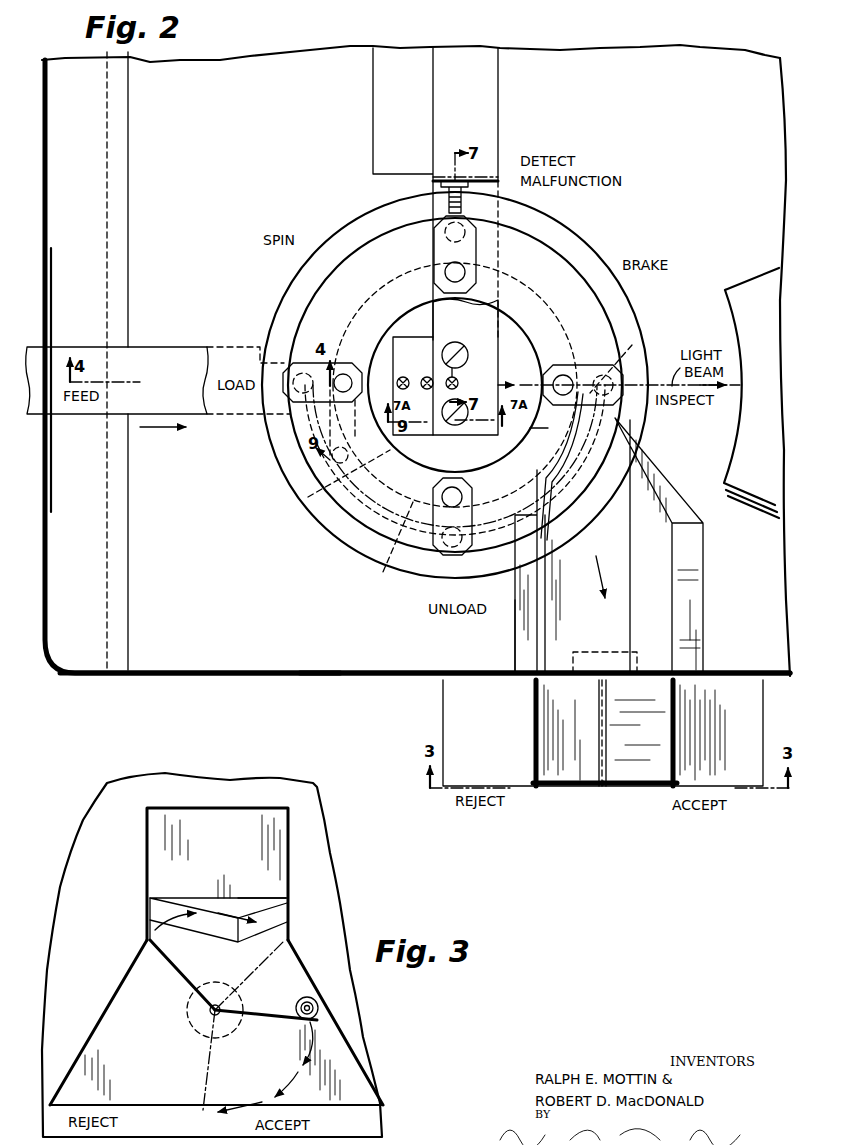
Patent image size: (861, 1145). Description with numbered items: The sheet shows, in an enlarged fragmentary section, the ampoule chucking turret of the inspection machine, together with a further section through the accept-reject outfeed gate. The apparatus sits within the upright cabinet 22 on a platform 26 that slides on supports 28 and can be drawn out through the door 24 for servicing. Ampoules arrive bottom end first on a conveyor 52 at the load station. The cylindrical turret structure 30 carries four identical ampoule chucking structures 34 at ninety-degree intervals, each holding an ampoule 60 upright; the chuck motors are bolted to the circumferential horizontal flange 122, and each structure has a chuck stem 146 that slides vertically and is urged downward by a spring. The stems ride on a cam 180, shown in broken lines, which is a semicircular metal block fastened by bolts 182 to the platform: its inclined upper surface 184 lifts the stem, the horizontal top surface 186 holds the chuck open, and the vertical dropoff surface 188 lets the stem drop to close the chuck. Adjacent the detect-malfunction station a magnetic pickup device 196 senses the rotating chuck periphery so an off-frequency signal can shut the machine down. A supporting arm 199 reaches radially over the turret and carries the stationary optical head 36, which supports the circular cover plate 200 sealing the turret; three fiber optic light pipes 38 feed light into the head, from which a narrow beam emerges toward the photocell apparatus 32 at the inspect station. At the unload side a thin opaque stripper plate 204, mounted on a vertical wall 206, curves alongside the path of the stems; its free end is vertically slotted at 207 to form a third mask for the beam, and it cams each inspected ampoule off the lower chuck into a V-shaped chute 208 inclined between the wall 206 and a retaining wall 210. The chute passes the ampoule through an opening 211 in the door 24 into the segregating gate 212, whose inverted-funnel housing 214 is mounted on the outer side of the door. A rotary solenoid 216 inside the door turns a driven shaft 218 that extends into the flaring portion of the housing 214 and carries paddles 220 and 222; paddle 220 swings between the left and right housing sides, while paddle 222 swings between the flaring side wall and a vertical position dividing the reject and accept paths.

In FIG. 2, the upright cabinet 22 is at (40, 670).
In FIG. 2, the door 24 is at (203, 675).
In FIG. 3, the door 24 is at (83, 856).
In FIG. 2, the platform 26 is at (313, 675).
In FIG. 2, the supports 28 is at (120, 559).
In FIG. 2, the turret structure 30 is at (345, 554).
In FIG. 2, the photocell apparatus 32 is at (745, 280).
In FIG. 2, the ampoule chucking structures 34 is at (484, 268).
In FIG. 2, the optical head 36 is at (425, 327).
In FIG. 2, the fiber optic light pipes 38 is at (450, 378).
In FIG. 2, the conveyor 52 is at (145, 350).
In FIG. 3, the ampoule 60 is at (300, 1000).
In FIG. 2, the circumferential horizontal flange 122 is at (626, 316).
In FIG. 2, the chuck stem 146 is at (447, 272).
In FIG. 2, the cam 180 is at (346, 531).
In FIG. 2, the bolts 182 is at (553, 478).
In FIG. 2, the inclined upper surface 184 is at (522, 429).
In FIG. 2, the horizontal top surface 186 is at (455, 424).
In FIG. 2, the vertical dropoff surface 188 is at (326, 426).
In FIG. 2, the magnetic pickup device 196 is at (448, 198).
In FIG. 2, the supporting arm 199 is at (498, 328).
In FIG. 2, the cover plate 200 is at (520, 341).
In FIG. 2, the stripper plate 204 is at (643, 414).
In FIG. 2, the vertical wall 206 is at (524, 641).
In FIG. 2, the vertical slot 207 is at (636, 344).
In FIG. 2, the V-shaped chute 208 is at (592, 504).
In FIG. 3, the V-shaped chute 208 is at (176, 910).
In FIG. 2, the retaining wall 210 is at (695, 608).
In FIG. 3, the opening 211 is at (266, 878).
In FIG. 2, the segregating gate 212 is at (441, 717).
In FIG. 3, the segregating gate 212 is at (140, 948).
In FIG. 3, the housing 214 is at (290, 913).
In FIG. 2, the rotary solenoid 216 is at (638, 650).
In FIG. 3, the rotary solenoid 216 is at (188, 1005).
In FIG. 2, the driven shaft 218 is at (609, 768).
In FIG. 3, the driven shaft 218 is at (207, 1018).
In FIG. 2, the paddle 220 is at (571, 776).
In FIG. 3, the paddle 220 is at (256, 966).
In FIG. 2, the paddle 222 is at (650, 778).
In FIG. 3, the paddle 222 is at (284, 1020).